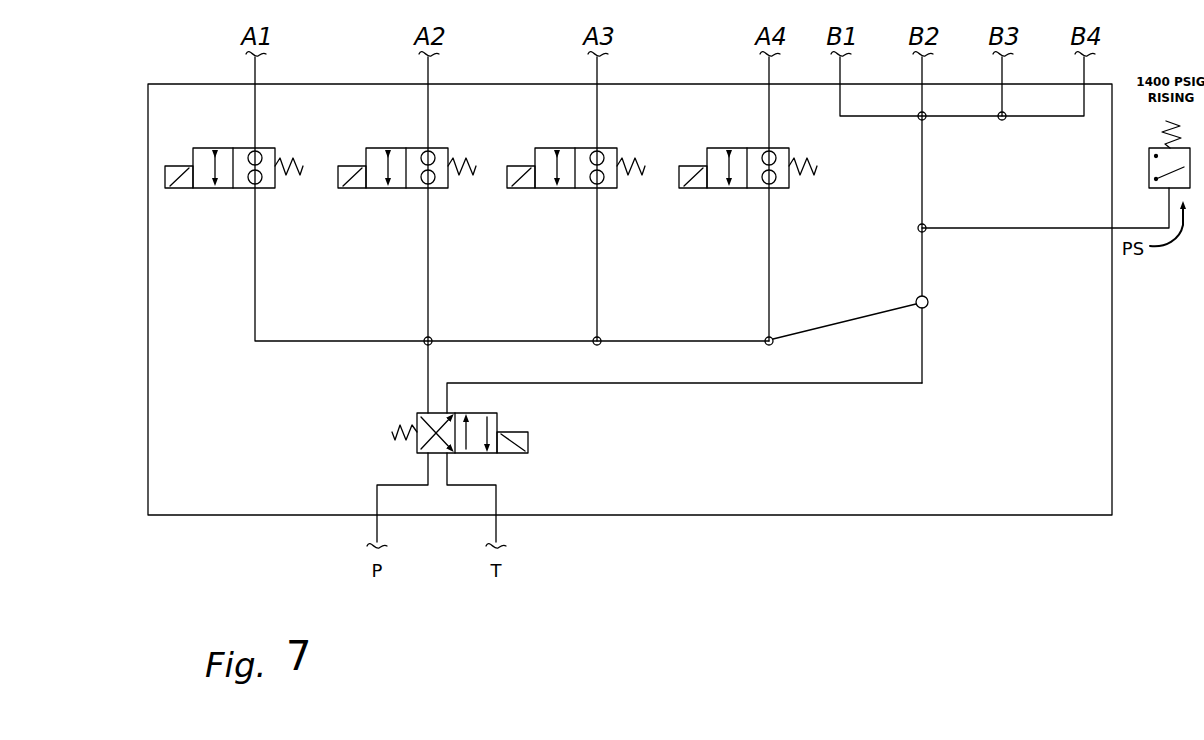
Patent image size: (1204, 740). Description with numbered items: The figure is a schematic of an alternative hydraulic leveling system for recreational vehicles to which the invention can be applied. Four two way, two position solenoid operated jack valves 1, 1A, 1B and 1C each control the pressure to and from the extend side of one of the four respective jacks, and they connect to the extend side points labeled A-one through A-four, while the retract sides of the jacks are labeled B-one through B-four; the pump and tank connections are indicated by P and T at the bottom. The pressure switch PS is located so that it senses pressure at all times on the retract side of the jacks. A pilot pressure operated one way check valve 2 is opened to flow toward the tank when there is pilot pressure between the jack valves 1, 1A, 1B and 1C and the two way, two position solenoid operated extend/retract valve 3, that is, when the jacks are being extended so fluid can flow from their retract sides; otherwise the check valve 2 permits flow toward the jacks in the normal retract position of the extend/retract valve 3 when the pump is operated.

The jack valve 1 is at (233, 167).
The jack valve 1A is at (401, 167).
The jack valve 1B is at (570, 167).
The jack valve 1C is at (742, 167).
The pilot pressure operated one way check valve 2 is at (859, 339).
The extend/retract valve 3 is at (460, 431).